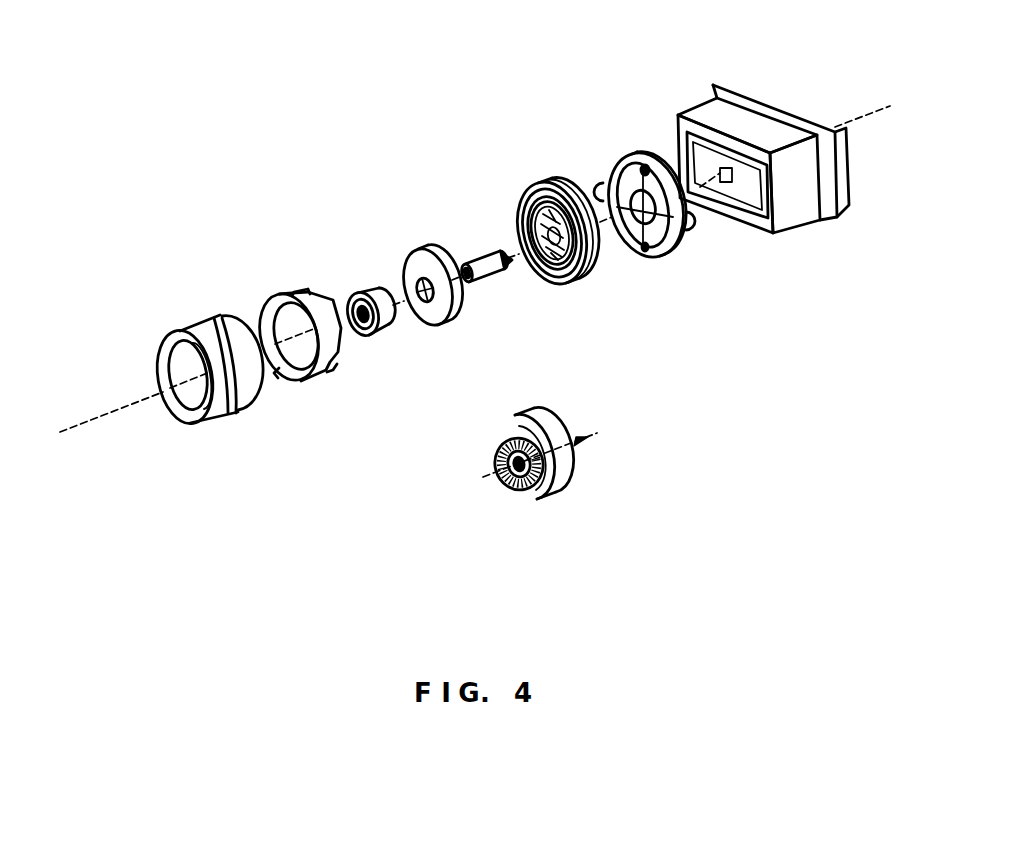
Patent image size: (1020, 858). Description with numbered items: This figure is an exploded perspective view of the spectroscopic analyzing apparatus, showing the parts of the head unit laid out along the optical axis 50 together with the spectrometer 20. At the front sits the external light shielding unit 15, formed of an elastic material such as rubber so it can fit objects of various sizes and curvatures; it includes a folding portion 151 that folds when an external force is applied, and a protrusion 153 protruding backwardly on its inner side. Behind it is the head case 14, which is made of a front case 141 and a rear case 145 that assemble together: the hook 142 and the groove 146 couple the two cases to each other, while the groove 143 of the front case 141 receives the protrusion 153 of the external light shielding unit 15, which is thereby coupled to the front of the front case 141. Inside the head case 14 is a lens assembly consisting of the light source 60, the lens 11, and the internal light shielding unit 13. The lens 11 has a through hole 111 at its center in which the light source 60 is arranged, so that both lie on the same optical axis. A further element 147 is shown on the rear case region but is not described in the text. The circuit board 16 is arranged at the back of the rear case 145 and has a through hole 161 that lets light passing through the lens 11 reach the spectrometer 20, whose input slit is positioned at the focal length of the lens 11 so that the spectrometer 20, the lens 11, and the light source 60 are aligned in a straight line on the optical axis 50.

The lens 11 is at (500, 375).
The internal light shielding unit 13 is at (378, 334).
The head case 14 is at (448, 272).
The external light shielding unit 15 is at (192, 352).
The circuit board 16 is at (629, 172).
The spectrometer 20 is at (698, 106).
The optical axis 50 is at (113, 408).
The light source 60 is at (497, 291).
The through hole 111 is at (418, 275).
The front case 141 is at (330, 366).
The hook 142 is at (273, 373).
The groove 143 is at (272, 320).
The rear case 145 is at (587, 273).
The groove 146 is at (543, 185).
The spring element 147 is at (550, 275).
The folding portion 151 is at (217, 397).
The protrusion 153 is at (160, 358).
The through hole 161 is at (631, 178).